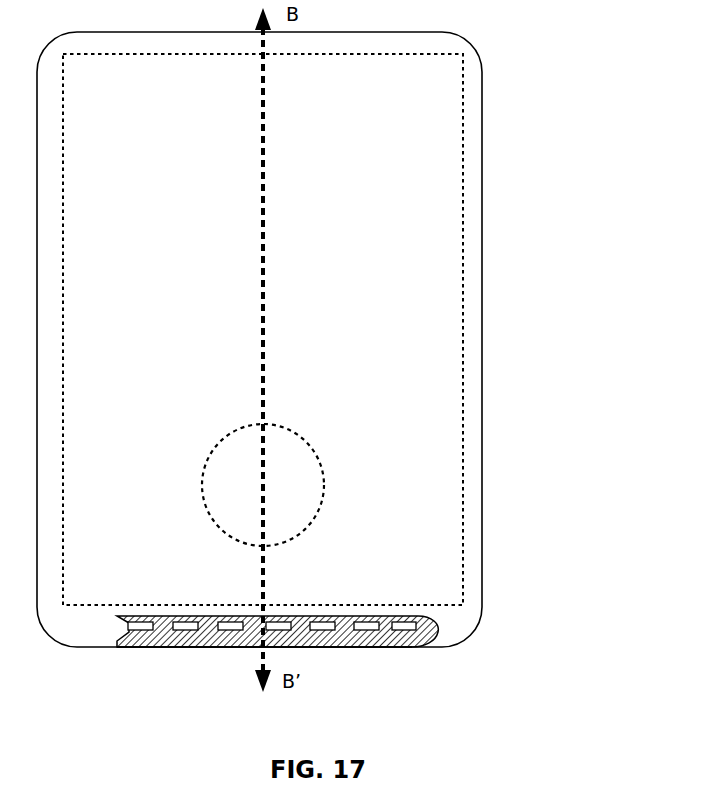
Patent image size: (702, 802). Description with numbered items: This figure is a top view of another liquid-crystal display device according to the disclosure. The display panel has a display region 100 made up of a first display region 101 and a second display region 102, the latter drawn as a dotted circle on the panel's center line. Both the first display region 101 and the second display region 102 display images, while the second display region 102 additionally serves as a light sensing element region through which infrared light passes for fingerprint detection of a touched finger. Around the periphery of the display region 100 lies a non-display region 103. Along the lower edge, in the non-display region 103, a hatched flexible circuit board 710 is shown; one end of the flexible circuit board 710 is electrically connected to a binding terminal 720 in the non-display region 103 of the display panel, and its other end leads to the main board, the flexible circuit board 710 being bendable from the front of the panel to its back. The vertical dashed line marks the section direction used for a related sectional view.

The display region 100 is at (463, 253).
The first display region 101 is at (433, 362).
The second display region 102 is at (310, 447).
The non-display region 103 is at (458, 619).
The flexible circuit board 710 is at (365, 628).
The binding terminal 720 is at (407, 648).